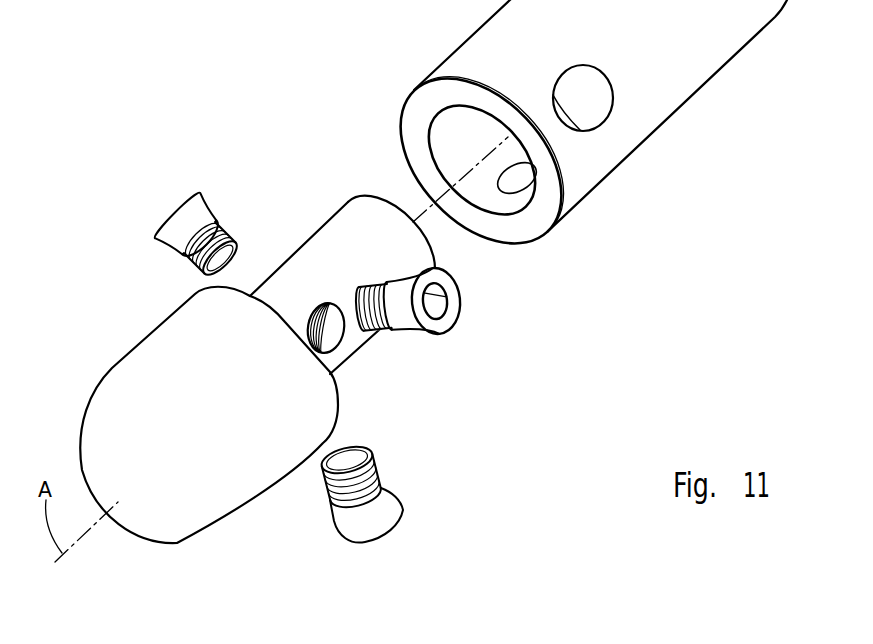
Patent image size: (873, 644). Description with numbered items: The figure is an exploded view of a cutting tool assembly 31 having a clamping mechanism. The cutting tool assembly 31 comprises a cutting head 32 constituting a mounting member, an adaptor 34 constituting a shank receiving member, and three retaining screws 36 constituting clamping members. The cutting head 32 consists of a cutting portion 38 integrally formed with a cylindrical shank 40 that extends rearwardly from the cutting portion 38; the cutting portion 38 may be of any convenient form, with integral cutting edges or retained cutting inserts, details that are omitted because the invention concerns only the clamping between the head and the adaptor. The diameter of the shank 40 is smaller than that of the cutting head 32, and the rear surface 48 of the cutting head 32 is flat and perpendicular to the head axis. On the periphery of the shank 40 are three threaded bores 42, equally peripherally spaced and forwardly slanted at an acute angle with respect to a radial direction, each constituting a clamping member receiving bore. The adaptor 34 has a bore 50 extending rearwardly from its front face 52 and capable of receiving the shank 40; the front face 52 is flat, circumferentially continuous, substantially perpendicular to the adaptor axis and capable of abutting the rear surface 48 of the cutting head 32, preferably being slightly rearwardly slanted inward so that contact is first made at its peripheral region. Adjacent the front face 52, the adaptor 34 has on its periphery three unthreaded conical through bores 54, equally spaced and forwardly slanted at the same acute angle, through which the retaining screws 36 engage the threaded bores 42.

The cutting tool assembly 31 is at (410, 317).
The cutting head 32 is at (314, 360).
The adaptor 34 is at (569, 137).
The retaining screws 36 is at (150, 198).
The cutting portion 38 is at (162, 367).
The cylindrical shank 40 is at (413, 250).
The threaded bores 42 is at (323, 337).
The rear surface 48 is at (335, 390).
The bore 50 is at (457, 130).
The front face 52 is at (417, 142).
The conical through bores 54 is at (587, 108).